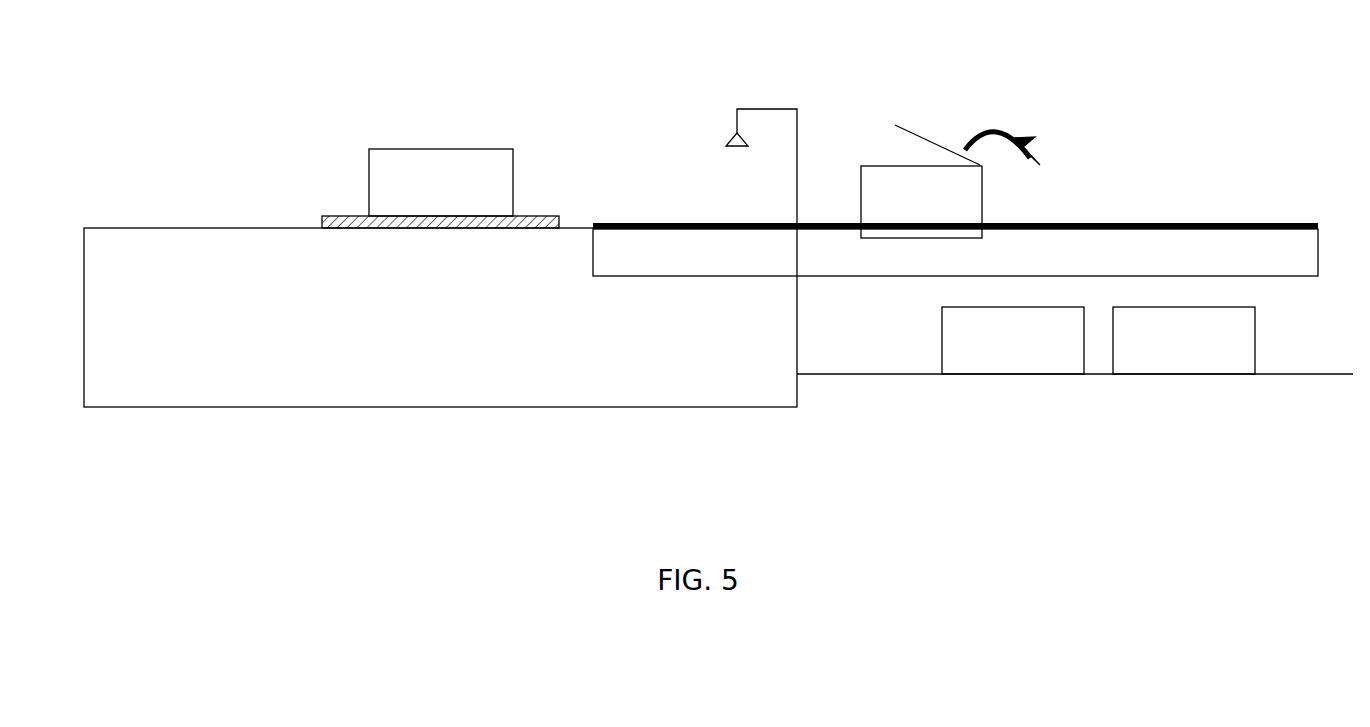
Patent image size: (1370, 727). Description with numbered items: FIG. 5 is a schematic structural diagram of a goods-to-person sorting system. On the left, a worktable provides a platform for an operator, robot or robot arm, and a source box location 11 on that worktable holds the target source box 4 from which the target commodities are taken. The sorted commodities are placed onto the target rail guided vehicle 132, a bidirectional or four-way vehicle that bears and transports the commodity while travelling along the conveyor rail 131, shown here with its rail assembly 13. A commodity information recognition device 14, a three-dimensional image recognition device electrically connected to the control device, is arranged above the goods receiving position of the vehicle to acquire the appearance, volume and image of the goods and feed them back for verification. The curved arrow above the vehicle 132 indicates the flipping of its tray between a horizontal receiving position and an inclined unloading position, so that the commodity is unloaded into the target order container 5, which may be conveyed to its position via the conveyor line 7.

The target source box 4 is at (447, 170).
The source box location 11 is at (340, 220).
The commodity information recognition device 14 is at (730, 142).
The cover plate 13 is at (1143, 245).
The conveyor rail 131 is at (1290, 225).
The target rail guided vehicle 132 is at (922, 175).
The conveyor line 7 is at (858, 348).
The target order container 5 is at (1188, 348).